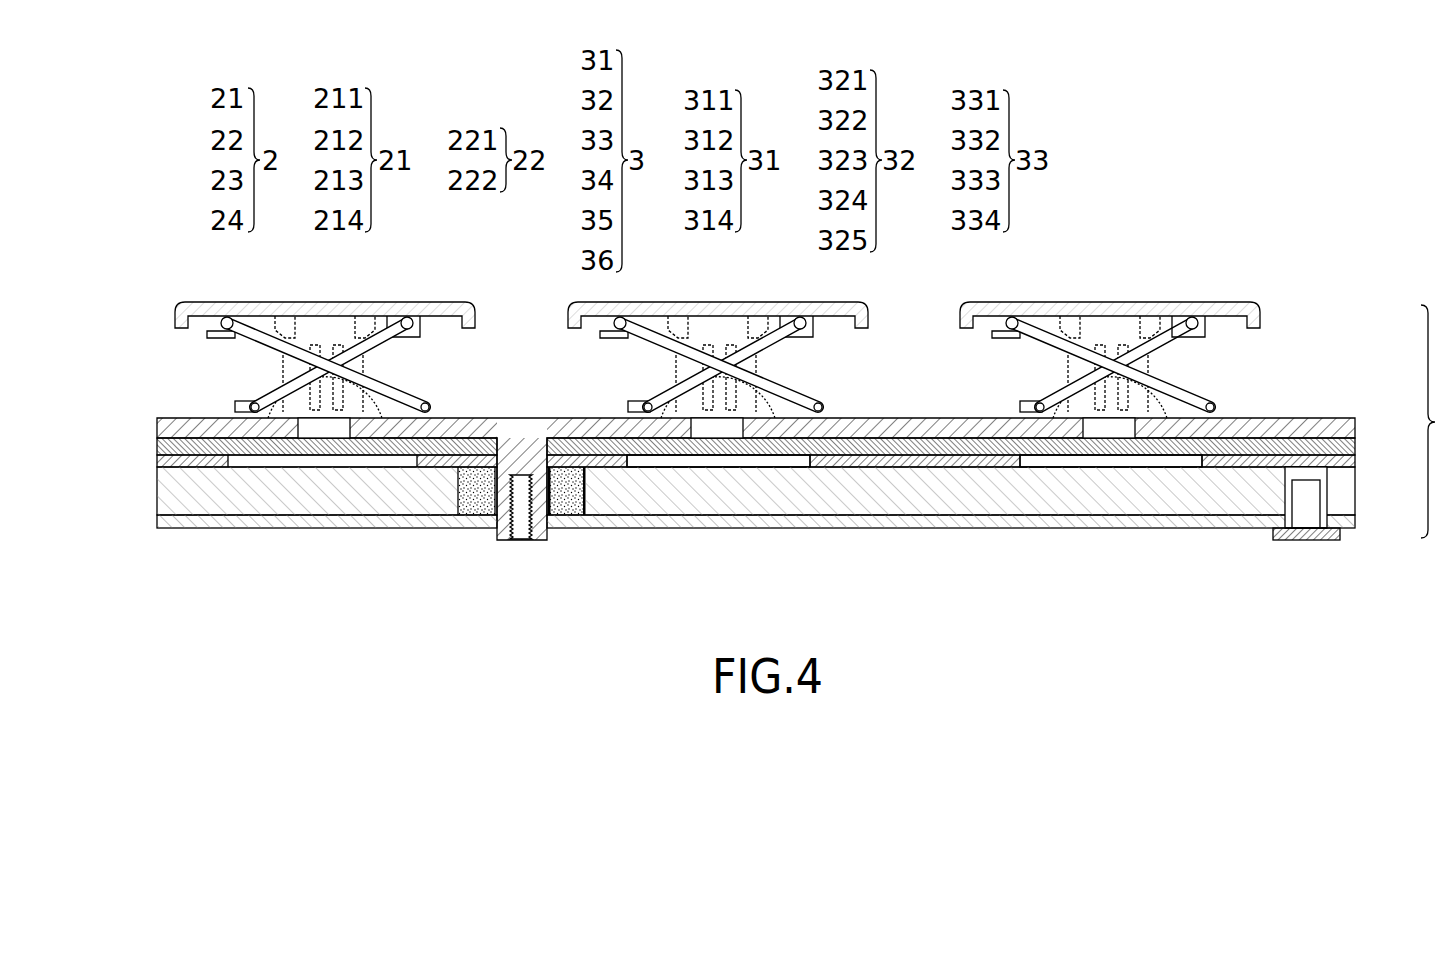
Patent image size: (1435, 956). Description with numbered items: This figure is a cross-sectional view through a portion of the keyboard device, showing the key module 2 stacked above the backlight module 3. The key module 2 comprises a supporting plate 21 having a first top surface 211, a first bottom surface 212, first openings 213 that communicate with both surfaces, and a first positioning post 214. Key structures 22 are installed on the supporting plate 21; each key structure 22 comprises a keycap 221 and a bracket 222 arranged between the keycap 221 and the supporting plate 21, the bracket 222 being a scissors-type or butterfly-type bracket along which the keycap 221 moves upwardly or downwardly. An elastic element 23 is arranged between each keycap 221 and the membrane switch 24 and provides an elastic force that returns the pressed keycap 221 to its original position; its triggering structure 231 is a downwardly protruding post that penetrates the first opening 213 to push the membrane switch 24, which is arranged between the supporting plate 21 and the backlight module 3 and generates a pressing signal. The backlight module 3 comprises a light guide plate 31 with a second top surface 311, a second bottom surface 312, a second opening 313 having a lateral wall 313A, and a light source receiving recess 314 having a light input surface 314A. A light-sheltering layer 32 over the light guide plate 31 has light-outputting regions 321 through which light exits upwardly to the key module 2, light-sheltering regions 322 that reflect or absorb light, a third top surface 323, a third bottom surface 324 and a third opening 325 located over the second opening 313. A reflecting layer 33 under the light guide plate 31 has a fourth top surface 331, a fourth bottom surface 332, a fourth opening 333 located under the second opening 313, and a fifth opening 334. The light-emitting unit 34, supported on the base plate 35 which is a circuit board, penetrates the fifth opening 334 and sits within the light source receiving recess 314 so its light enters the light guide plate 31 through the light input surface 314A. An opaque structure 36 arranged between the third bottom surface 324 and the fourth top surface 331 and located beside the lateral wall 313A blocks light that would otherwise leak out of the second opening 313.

The key module 2 is at (1125, 347).
The supporting plate 21 is at (230, 428).
The first top surface 211 is at (1230, 418).
The first bottom surface 212 is at (1330, 445).
The first opening 213 is at (1147, 363).
The first positioning post 214 is at (527, 468).
The key structure 22 is at (1141, 334).
The keycap 221 is at (1207, 315).
The bracket 222 is at (1165, 335).
The elastic element 23 is at (1097, 330).
The triggering structure 231 is at (1043, 398).
The membrane switch 24 is at (1268, 445).
The backlight module 3 is at (756, 479).
The light guide plate 31 is at (320, 503).
The second top surface 311 is at (865, 452).
The second bottom surface 312 is at (867, 517).
The second opening 313 is at (590, 503).
The lateral wall 313A is at (588, 480).
The light source receiving recess 314 is at (1308, 470).
The light input surface 314A is at (1280, 483).
The light-sheltering layer 32 is at (157, 457).
The light-outputting region 321 is at (730, 460).
The light-sheltering region 322 is at (912, 462).
The third top surface 323 is at (962, 450).
The third bottom surface 324 is at (990, 468).
The third opening 325 is at (580, 453).
The reflecting layer 33 is at (370, 522).
The fourth top surface 331 is at (190, 510).
The fourth bottom surface 332 is at (228, 527).
The fourth opening 333 is at (493, 518).
The fifth opening 334 is at (1283, 520).
The light-emitting unit 34 is at (1305, 512).
The base plate 35 is at (1310, 533).
The opaque structure 36 is at (470, 482).